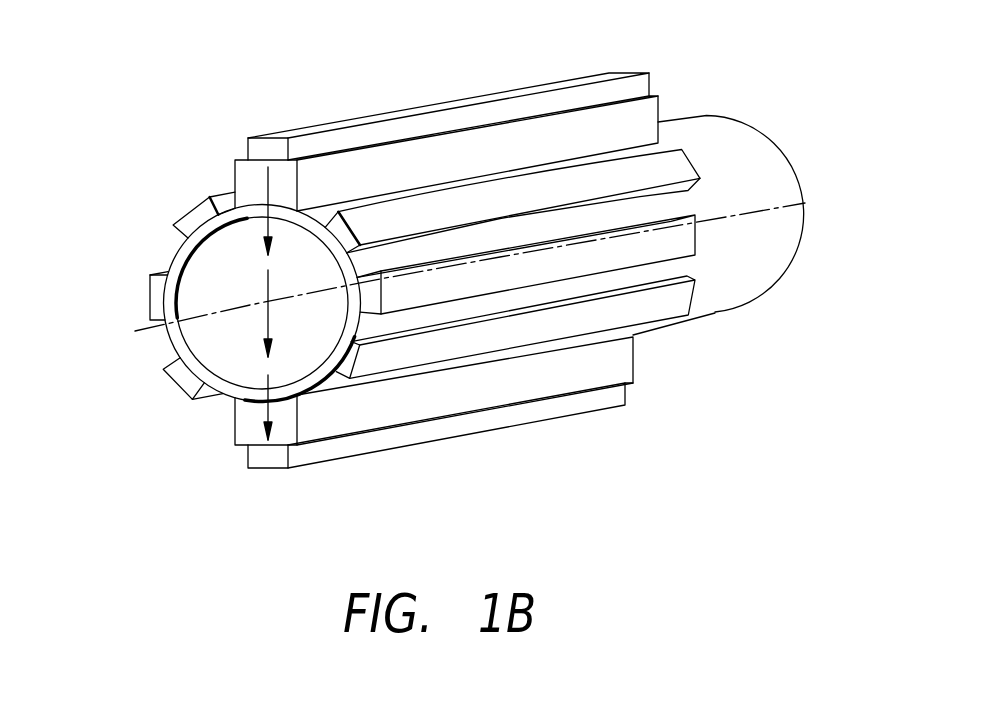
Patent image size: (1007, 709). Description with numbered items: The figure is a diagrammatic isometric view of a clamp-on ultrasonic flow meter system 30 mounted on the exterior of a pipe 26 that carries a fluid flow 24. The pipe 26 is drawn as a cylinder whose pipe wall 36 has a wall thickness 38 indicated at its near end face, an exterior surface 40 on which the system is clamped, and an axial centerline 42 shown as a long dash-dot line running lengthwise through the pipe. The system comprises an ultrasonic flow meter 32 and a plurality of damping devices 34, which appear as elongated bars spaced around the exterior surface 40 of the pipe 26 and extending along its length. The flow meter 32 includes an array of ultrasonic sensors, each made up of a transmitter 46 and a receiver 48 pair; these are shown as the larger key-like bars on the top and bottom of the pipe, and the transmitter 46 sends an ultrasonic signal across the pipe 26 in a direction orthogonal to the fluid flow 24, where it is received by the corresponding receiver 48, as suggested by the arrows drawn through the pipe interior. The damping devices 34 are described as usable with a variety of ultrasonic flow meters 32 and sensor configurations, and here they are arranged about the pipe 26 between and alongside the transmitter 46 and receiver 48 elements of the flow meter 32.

The fluid flow 24 is at (230, 355).
The pipe 26 is at (719, 314).
The ultrasonic flow meter system 30 is at (602, 447).
The ultrasonic flow meter 32 is at (300, 81).
The damping device 34 is at (148, 275).
The pipe wall 36 is at (234, 394).
The wall thickness 38 is at (220, 318).
The exterior surface 40 is at (173, 250).
The axial centerline 42 is at (745, 214).
The transmitter 46 is at (448, 103).
The receiver 48 is at (378, 452).